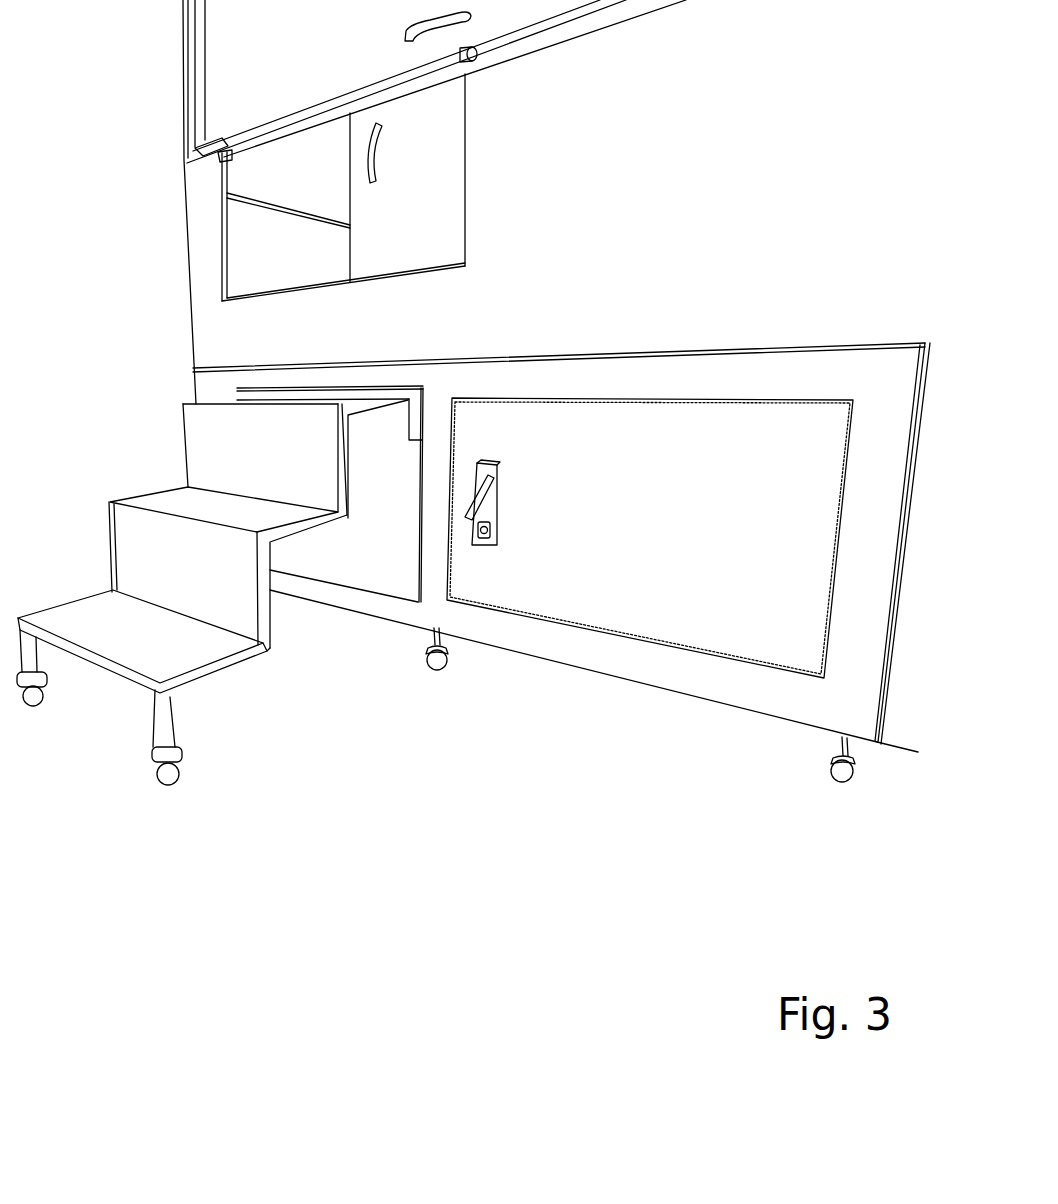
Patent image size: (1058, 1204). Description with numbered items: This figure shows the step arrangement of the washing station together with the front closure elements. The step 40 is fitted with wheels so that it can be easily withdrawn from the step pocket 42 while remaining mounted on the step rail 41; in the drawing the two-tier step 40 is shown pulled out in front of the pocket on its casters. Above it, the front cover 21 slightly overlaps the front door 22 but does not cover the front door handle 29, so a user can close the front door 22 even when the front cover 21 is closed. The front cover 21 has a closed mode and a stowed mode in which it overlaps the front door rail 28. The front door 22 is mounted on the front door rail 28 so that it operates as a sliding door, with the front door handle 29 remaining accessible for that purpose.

The front cover 21 is at (663, 0).
The front door 22 is at (380, 187).
The front door rail 28 is at (223, 157).
The front door handle 29 is at (368, 152).
The step 40 is at (230, 663).
The step rail 41 is at (240, 402).
The step pocket 42 is at (393, 470).